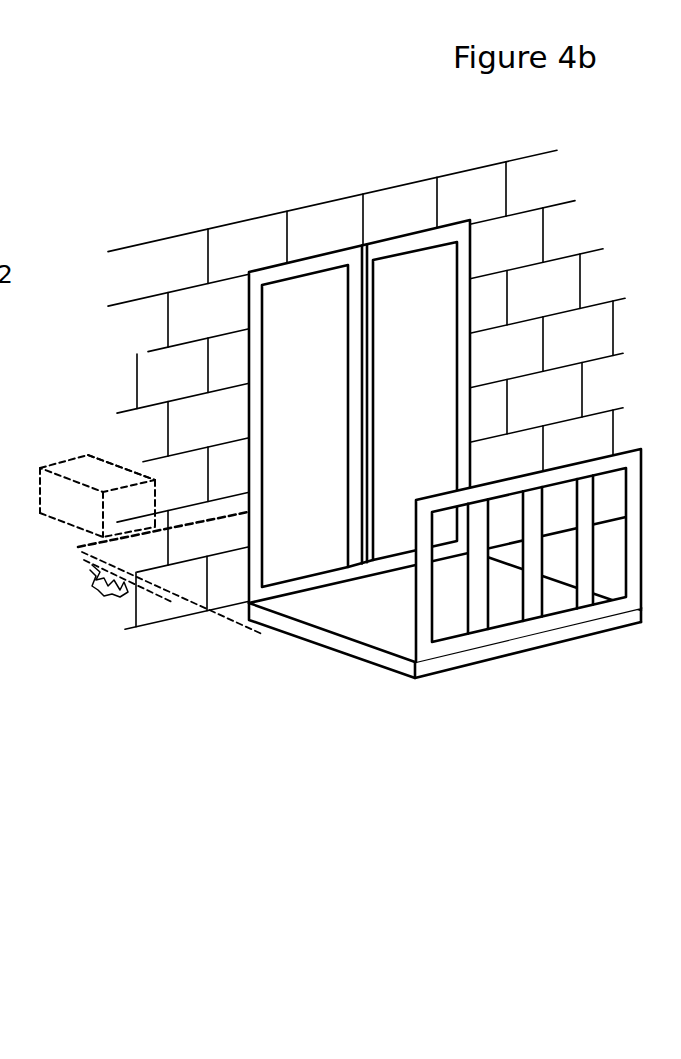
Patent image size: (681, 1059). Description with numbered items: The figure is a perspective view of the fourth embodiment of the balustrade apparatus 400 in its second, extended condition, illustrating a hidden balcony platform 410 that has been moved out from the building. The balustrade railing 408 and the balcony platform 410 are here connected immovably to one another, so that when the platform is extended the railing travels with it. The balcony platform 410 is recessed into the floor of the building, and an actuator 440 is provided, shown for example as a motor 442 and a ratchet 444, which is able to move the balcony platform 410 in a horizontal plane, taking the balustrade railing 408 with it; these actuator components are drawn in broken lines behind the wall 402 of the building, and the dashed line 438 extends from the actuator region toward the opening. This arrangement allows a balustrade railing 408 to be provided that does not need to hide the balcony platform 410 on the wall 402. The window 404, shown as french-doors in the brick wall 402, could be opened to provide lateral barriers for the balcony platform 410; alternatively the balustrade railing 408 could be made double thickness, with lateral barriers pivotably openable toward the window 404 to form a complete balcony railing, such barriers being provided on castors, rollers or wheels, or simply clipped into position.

The balustrade apparatus 400 is at (200, 183).
The wall 402 is at (530, 238).
The window 404 is at (412, 250).
The balustrade railing 408 is at (639, 577).
The balcony platform 410 is at (372, 660).
The detection line 438 is at (127, 537).
The actuator 440 is at (97, 451).
The motor 442 is at (133, 462).
The ratchet 444 is at (172, 606).